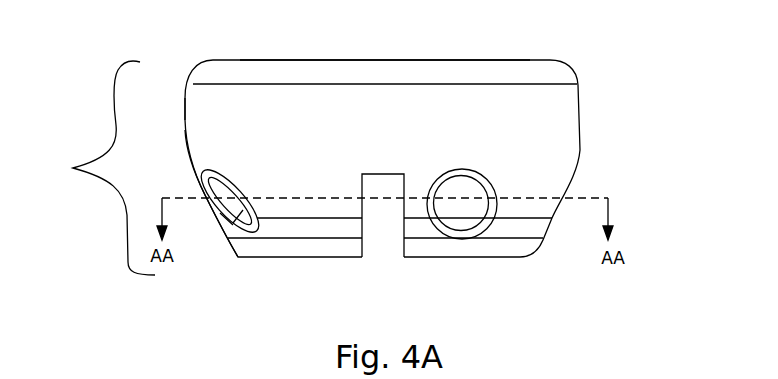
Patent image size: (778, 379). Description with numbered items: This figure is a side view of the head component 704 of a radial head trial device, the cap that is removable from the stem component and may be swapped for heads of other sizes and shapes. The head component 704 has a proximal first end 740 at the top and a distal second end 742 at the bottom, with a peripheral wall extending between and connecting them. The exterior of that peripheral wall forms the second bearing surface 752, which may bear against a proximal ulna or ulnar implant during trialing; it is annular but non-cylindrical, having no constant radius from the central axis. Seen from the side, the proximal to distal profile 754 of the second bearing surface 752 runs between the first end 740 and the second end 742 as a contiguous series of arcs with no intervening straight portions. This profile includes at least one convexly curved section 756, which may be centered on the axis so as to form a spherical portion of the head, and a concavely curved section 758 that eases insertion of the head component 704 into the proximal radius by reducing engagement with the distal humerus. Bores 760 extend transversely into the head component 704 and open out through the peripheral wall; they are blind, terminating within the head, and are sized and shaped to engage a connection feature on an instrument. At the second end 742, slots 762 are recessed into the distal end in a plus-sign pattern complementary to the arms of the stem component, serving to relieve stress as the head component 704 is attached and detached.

The head component 704 is at (597, 85).
The first end 740 is at (440, 60).
The second end 742 is at (430, 258).
The second bearing surface 752 is at (186, 98).
The proximal to distal profile 754 is at (91, 168).
The convexly curved section 756 is at (186, 143).
The concavely curved section 758 is at (222, 233).
The bores 760 is at (465, 218).
The slots 762 is at (380, 230).